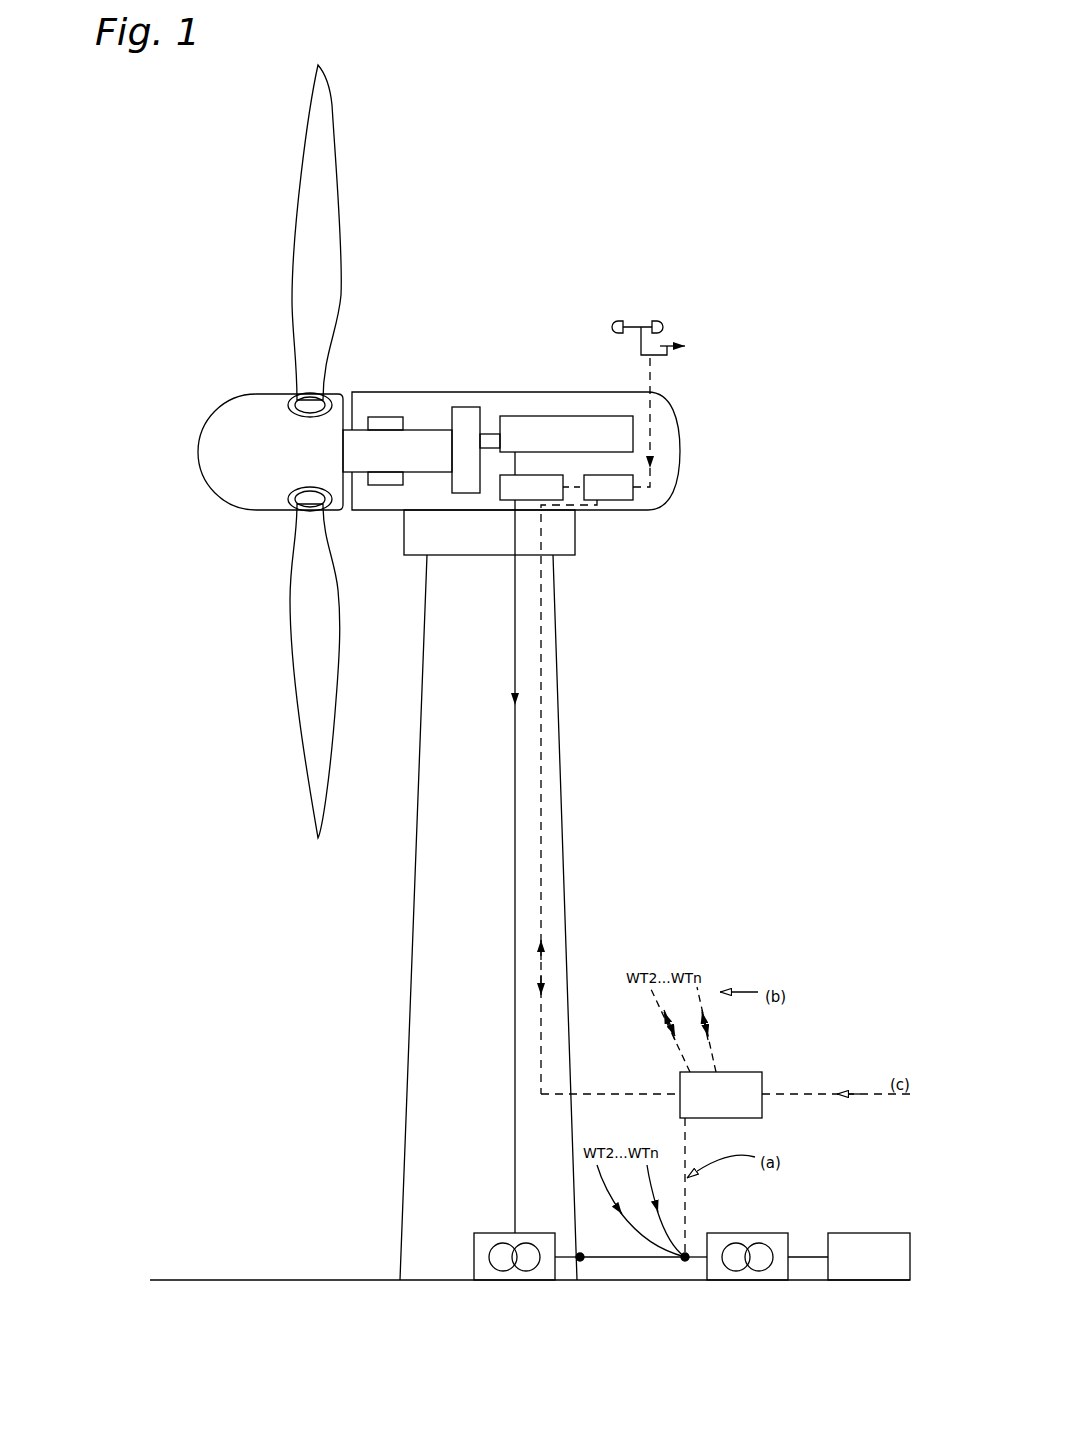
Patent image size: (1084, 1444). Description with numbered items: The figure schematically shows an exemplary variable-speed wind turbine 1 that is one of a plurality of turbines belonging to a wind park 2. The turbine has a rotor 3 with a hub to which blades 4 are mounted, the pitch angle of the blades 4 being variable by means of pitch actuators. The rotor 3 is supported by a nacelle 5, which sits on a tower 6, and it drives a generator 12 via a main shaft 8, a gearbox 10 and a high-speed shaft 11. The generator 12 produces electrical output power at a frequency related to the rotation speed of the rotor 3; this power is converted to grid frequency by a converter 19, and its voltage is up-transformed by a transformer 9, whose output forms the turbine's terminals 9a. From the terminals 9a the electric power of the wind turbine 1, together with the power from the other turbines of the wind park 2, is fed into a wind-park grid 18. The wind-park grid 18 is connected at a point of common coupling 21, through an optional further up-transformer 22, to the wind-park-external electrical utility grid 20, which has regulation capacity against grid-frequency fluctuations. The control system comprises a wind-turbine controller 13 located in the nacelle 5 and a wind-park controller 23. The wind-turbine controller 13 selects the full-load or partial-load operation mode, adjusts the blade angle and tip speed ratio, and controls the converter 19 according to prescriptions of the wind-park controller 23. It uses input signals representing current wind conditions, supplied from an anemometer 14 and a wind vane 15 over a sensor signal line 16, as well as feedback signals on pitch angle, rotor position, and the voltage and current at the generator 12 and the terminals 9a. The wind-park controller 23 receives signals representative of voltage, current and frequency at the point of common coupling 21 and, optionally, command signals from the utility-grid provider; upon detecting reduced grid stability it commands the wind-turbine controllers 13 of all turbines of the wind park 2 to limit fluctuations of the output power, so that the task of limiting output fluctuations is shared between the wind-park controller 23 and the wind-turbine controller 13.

The wind turbine 1 is at (505, 216).
The wind park 2 is at (196, 266).
The rotor 3 is at (198, 458).
The blades 4 is at (333, 188).
The nacelle 5 is at (385, 392).
The tower 6 is at (407, 1015).
The main shaft 8 is at (421, 428).
The transformer 9 is at (485, 1238).
The terminals 9a is at (580, 1262).
The gearbox 10 is at (468, 407).
The high-speed shaft 11 is at (493, 420).
The generator 12 is at (565, 416).
The wind-turbine controller 13 is at (627, 500).
The anemometer 14 is at (657, 318).
The wind vane 15 is at (689, 331).
The sensor signal line 16 is at (650, 420).
The wind-park grid 18 is at (640, 1258).
The converter 19 is at (497, 502).
The utility grid 20 is at (887, 1280).
The point of common coupling 21 is at (688, 1262).
The further up-transformer 22 is at (778, 1275).
The wind-park controller 23 is at (748, 1072).